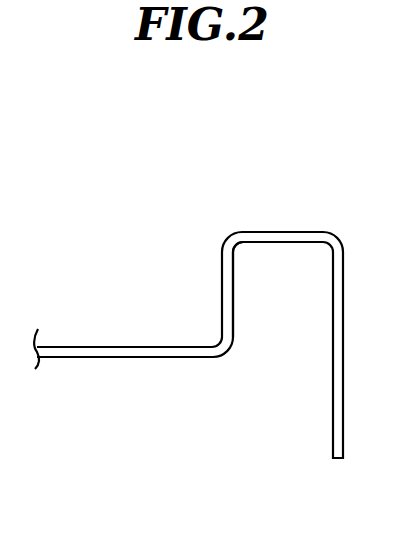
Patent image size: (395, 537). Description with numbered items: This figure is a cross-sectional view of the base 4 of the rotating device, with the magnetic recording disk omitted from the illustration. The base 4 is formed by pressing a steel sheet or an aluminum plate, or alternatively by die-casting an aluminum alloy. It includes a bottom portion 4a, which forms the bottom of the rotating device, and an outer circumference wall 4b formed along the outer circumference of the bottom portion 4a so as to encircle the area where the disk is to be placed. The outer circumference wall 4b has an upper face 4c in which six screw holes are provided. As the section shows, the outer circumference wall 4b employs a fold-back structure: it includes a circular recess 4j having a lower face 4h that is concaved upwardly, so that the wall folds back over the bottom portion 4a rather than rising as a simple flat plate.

The base 4 is at (134, 359).
The bottom portion 4a is at (91, 347).
The outer circumference wall 4b is at (290, 237).
The upper face 4c is at (267, 232).
The lower face 4h is at (71, 359).
The circular recess 4j is at (233, 302).